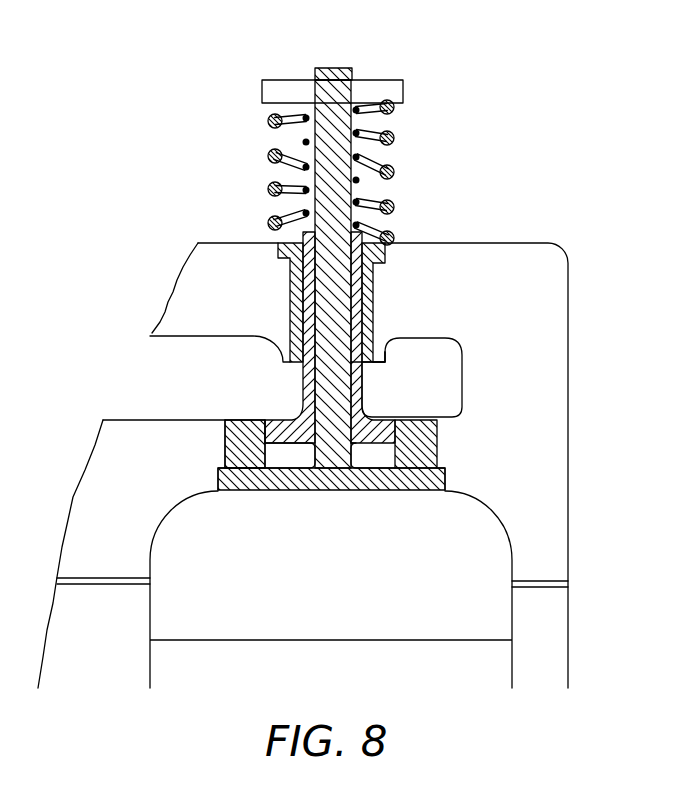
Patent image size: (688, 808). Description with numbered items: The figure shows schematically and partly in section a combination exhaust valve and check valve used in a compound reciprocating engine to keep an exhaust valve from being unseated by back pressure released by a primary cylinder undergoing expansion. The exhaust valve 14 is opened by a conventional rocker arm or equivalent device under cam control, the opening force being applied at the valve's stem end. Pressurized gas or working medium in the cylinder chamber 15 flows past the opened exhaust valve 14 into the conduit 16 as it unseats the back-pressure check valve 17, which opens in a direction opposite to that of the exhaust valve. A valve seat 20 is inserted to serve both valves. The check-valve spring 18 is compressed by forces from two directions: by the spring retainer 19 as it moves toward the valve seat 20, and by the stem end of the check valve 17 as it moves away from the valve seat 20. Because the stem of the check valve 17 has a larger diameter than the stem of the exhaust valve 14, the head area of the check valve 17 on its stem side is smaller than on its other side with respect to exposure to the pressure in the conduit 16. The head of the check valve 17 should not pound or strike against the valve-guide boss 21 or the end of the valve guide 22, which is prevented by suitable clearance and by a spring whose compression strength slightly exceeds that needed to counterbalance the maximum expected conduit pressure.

The exhaust valve 14 is at (308, 482).
The cylinder chamber 15 is at (458, 525).
The conduit 16 is at (440, 373).
The back-pressure check valve 17 is at (273, 418).
The check-valve spring 18 is at (303, 140).
The spring retainer 19 is at (384, 88).
The valve seat 20 is at (438, 443).
The valve-guide boss 21 is at (377, 357).
The valve guide 22 is at (280, 258).